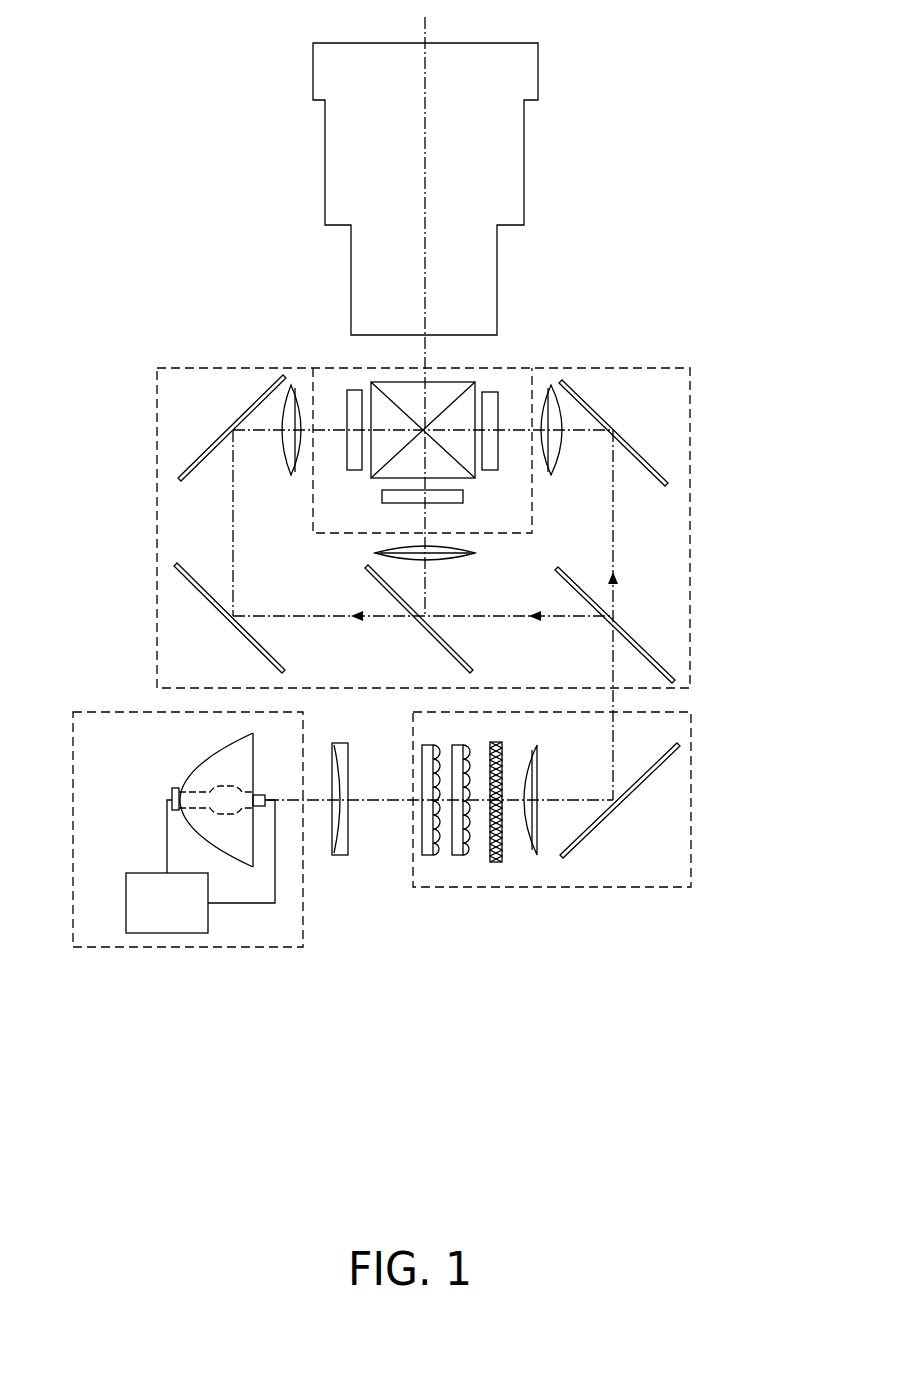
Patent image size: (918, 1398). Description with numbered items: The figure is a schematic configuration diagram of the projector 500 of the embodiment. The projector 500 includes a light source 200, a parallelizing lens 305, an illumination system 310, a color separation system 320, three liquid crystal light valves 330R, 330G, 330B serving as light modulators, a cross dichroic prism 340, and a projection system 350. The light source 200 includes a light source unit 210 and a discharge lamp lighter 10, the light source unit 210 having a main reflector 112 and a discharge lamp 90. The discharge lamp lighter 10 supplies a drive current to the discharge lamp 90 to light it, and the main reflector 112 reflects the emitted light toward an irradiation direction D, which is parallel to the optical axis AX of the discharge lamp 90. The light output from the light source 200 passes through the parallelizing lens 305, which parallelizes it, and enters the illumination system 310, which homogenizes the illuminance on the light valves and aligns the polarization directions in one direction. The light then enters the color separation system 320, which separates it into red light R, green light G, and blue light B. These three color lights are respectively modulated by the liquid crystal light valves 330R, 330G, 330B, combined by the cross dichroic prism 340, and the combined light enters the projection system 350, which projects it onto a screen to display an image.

The projector 500 is at (610, 31).
The projection system 350 is at (524, 192).
The cross dichroic prism 340 is at (410, 382).
The liquid crystal light valve 330R is at (490, 392).
The liquid crystal light valve 330G is at (453, 503).
The liquid crystal light valve 330B is at (357, 470).
The color separation system 320 is at (690, 664).
The illumination system 310 is at (691, 852).
The parallelizing lens 305 is at (340, 855).
The light source 200 is at (157, 950).
The light source unit 210 is at (187, 796).
The main reflector 112 is at (190, 763).
The discharge lamp 90 is at (258, 792).
The discharge lamp lighter 10 is at (126, 910).
The red light R is at (613, 540).
The green light G is at (425, 580).
The blue light B is at (233, 545).
The optical axis AX is at (398, 805).
The irradiation direction D is at (278, 970).